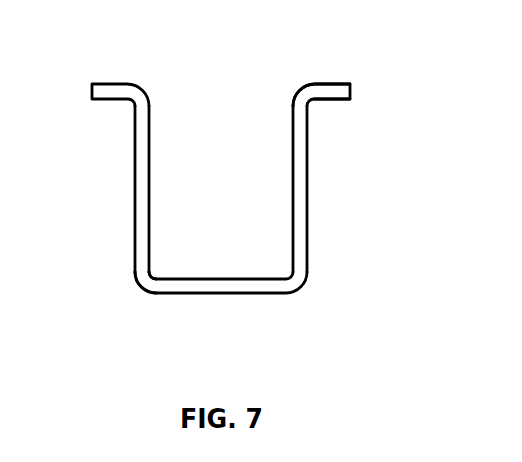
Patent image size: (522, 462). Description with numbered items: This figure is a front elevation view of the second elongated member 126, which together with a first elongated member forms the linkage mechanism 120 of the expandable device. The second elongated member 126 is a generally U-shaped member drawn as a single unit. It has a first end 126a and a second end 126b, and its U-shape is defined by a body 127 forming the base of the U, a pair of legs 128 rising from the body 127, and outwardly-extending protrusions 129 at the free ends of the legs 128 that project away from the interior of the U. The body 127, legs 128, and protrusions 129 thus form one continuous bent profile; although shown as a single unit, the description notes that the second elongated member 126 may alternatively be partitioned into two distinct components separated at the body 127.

The linkage mechanism 120 is at (225, 188).
The second elongated member 126 is at (223, 188).
The first end 126a is at (130, 305).
The second end 126b is at (316, 66).
The body 127 is at (252, 294).
The legs 128 is at (135, 216).
The outwardly-extending protrusions 129 is at (108, 99).